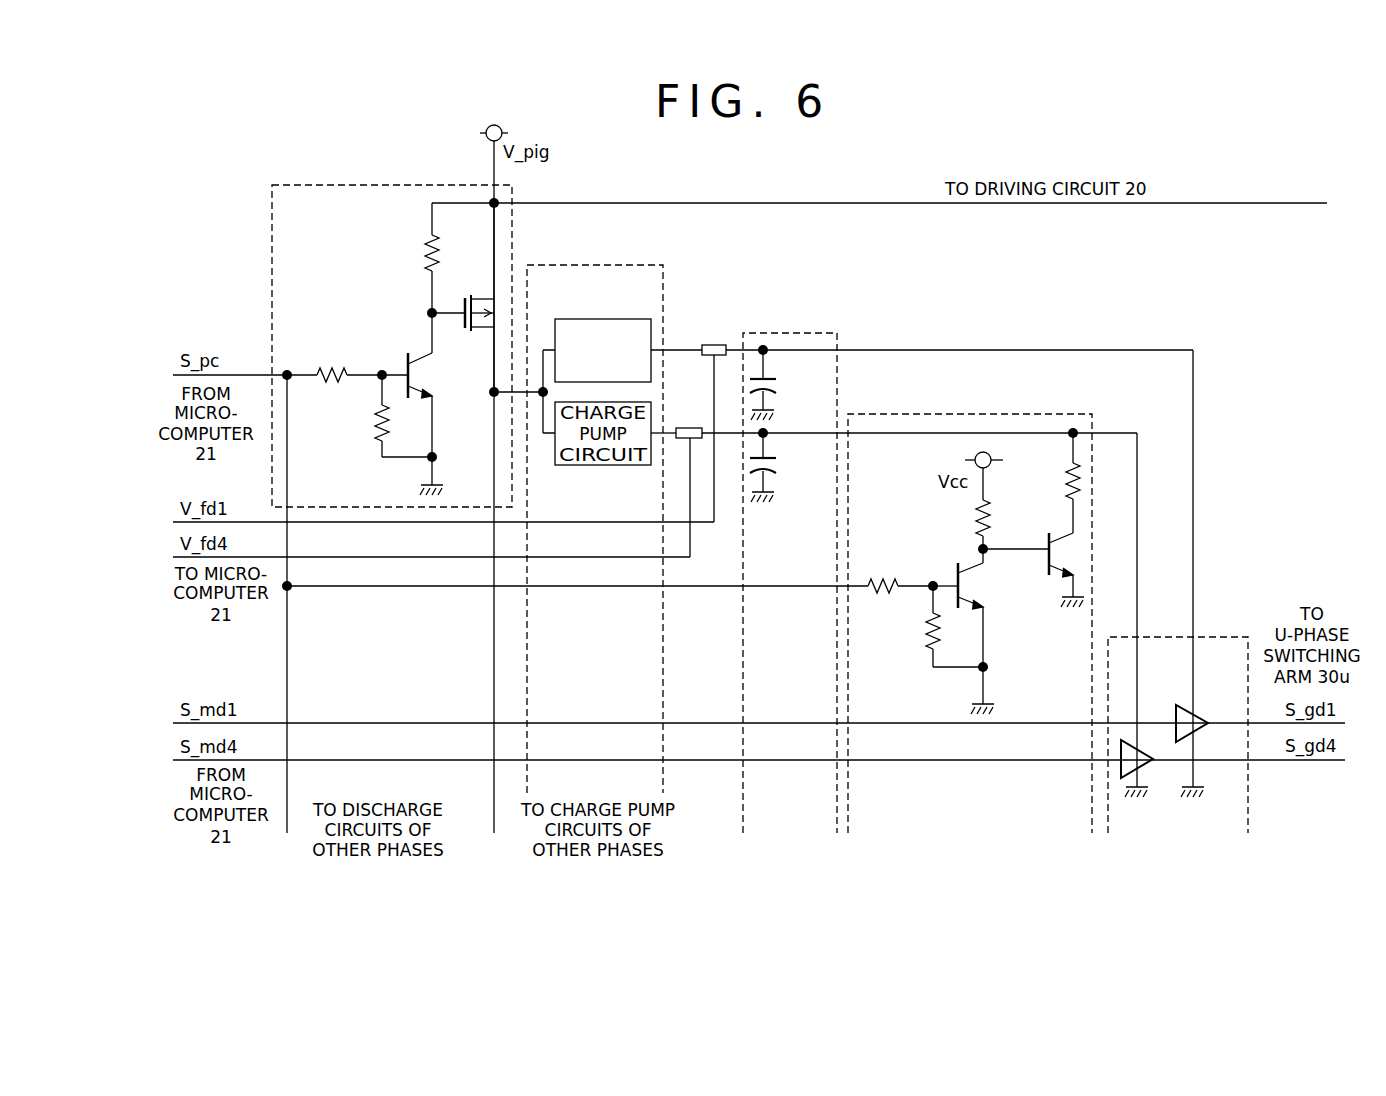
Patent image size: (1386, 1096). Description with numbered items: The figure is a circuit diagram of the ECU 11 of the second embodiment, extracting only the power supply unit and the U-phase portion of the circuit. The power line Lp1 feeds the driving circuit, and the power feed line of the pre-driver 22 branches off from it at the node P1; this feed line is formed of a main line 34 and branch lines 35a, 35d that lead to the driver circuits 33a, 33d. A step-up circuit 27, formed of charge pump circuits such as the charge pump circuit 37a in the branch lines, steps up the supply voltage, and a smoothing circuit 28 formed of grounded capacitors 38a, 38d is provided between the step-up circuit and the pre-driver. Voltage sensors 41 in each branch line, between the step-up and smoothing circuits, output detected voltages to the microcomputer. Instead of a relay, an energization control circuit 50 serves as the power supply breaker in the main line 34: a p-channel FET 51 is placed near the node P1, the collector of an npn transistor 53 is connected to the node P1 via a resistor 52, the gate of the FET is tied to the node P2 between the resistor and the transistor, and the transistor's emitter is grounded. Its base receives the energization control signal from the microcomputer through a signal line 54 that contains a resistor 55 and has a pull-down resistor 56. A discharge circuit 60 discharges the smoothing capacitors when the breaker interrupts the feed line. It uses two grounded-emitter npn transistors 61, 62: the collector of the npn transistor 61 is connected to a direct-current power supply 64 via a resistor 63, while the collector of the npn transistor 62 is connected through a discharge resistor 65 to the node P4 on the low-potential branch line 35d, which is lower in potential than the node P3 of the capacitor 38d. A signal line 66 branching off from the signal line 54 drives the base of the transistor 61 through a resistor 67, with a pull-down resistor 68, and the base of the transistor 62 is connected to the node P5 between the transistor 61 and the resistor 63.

The ECU 11 is at (1291, 171).
The pre-driver 22 is at (1214, 637).
The step-up circuit 27 is at (633, 265).
The smoothing circuit 28 is at (793, 333).
The driver circuit 33a is at (1200, 723).
The driver circuit 33d is at (1144, 748).
The main line 34 is at (500, 215).
The branch line 35a is at (1010, 350).
The branch line 35d is at (1118, 433).
The charge pump circuit 37a is at (620, 302).
The capacitor 38a is at (766, 377).
The capacitor 38d is at (766, 469).
The voltage sensor 41 is at (715, 345).
The energization control circuit 50 is at (378, 184).
The p-channel FET 51 is at (461, 295).
The resistor 52 is at (428, 242).
The npn transistor 53 is at (408, 362).
The signal line 54 is at (287, 373).
The resistor 55 is at (330, 385).
The pull-down resistor 56 is at (370, 425).
The discharge circuit 60 is at (963, 414).
The npn transistor 61 is at (958, 572).
The npn transistor 62 is at (1049, 545).
The resistor 63 is at (980, 506).
The direct-current power supply 64 is at (965, 460).
The discharge resistor 65 is at (1073, 477).
The signal line 66 is at (720, 586).
The resistor 67 is at (882, 572).
The pull-down resistor 68 is at (923, 630).
The power line Lp1 is at (742, 203).
The node P1 is at (503, 200).
The node P2 is at (430, 313).
The node P3 is at (763, 433).
The node P4 is at (1073, 433).
The node P5 is at (984, 567).